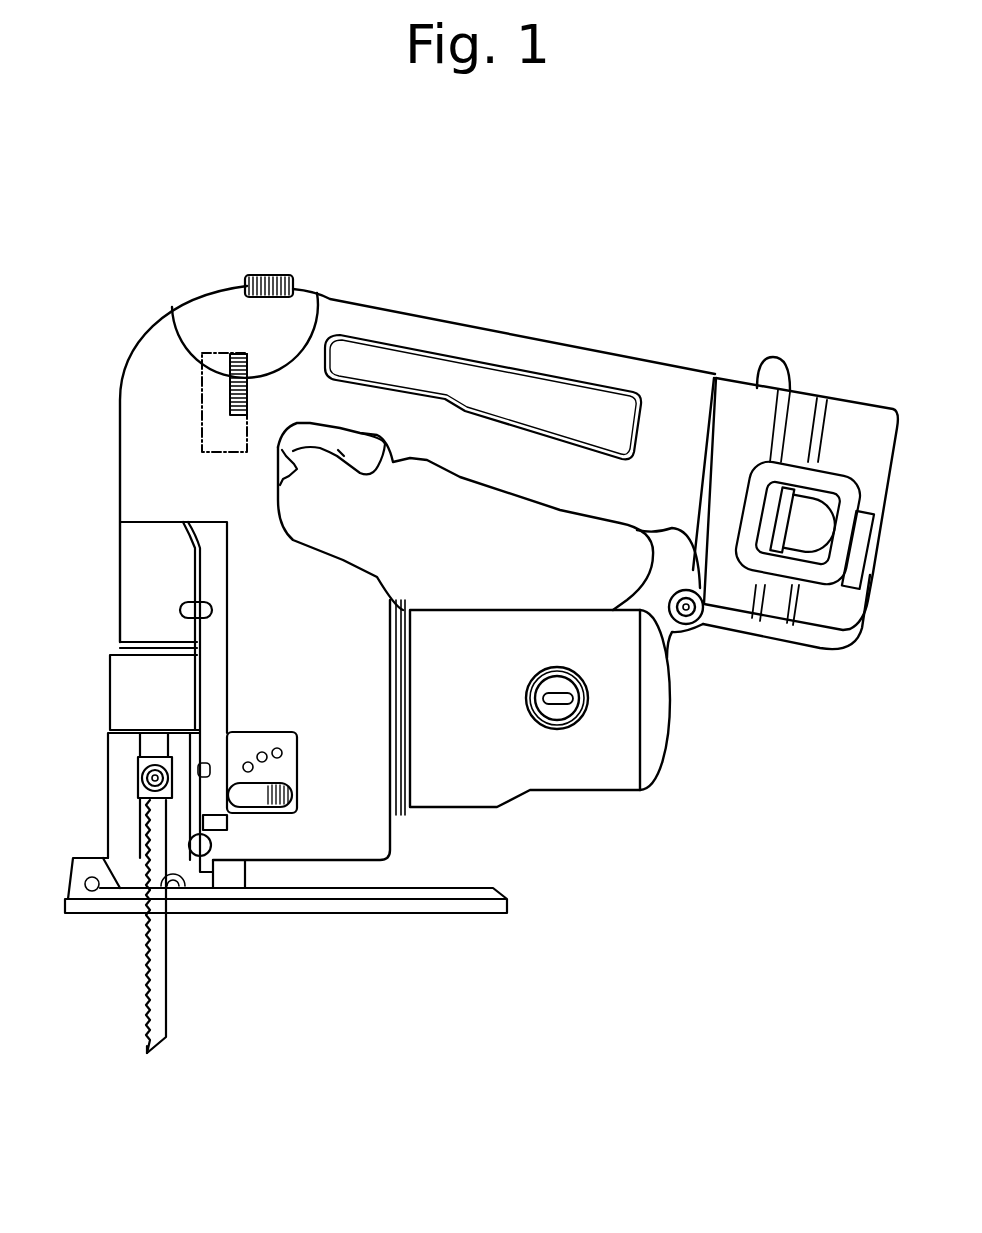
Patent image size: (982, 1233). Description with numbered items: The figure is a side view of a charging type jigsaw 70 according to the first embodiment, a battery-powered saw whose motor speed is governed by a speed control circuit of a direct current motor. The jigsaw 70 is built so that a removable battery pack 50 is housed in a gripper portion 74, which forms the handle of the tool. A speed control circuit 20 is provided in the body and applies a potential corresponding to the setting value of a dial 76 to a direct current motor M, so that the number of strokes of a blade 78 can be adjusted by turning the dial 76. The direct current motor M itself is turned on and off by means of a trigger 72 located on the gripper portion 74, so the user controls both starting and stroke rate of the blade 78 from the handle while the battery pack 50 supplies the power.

The speed control circuit 20 is at (178, 297).
The removable battery pack 50 is at (857, 590).
The charging type jigsaw 70 is at (697, 374).
The trigger 72 is at (332, 460).
The gripper portion 74 is at (525, 388).
The dial 76 is at (320, 297).
The blade 78 is at (153, 830).
The direct current motor M is at (500, 760).